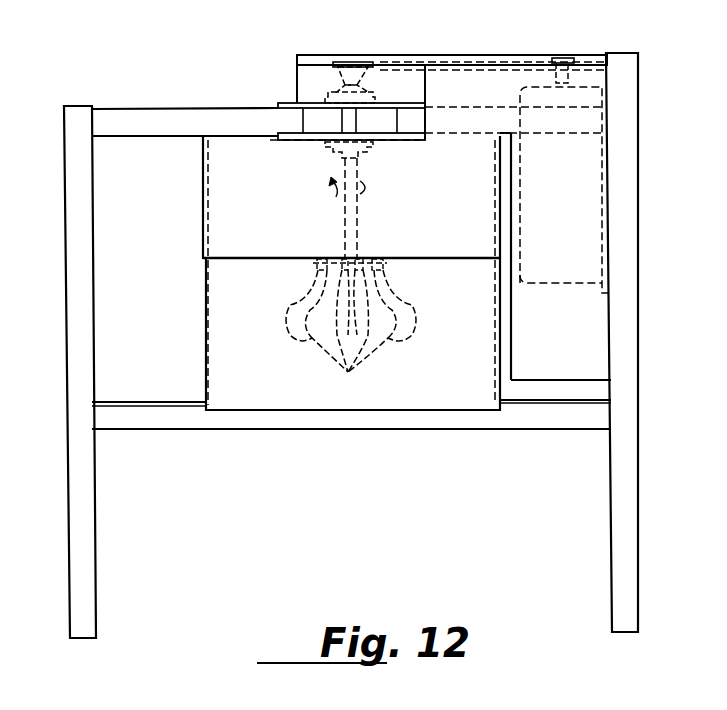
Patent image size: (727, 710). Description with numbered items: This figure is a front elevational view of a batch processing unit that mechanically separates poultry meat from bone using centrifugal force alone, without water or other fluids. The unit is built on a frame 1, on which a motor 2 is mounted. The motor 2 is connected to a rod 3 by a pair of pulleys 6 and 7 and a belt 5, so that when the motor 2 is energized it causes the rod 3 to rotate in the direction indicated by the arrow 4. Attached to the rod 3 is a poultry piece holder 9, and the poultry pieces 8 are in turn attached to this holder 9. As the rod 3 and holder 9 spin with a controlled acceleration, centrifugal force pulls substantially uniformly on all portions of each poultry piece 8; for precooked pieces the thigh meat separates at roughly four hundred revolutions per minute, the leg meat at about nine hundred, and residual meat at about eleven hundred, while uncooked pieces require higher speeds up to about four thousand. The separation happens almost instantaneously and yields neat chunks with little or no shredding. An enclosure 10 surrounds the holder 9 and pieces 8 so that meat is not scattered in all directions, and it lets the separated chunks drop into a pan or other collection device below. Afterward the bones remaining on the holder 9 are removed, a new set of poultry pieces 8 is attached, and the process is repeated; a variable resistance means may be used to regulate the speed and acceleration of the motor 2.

The frame 1 is at (75, 307).
The motor 2 is at (583, 223).
The rod 3 is at (368, 233).
The arrow 4 is at (336, 195).
The belt 5 is at (468, 67).
The pulley 6 is at (570, 76).
The pulley 7 is at (372, 57).
The poultry pieces 8 is at (351, 335).
The poultry piece holder 9 is at (387, 267).
The enclosure 10 is at (263, 383).